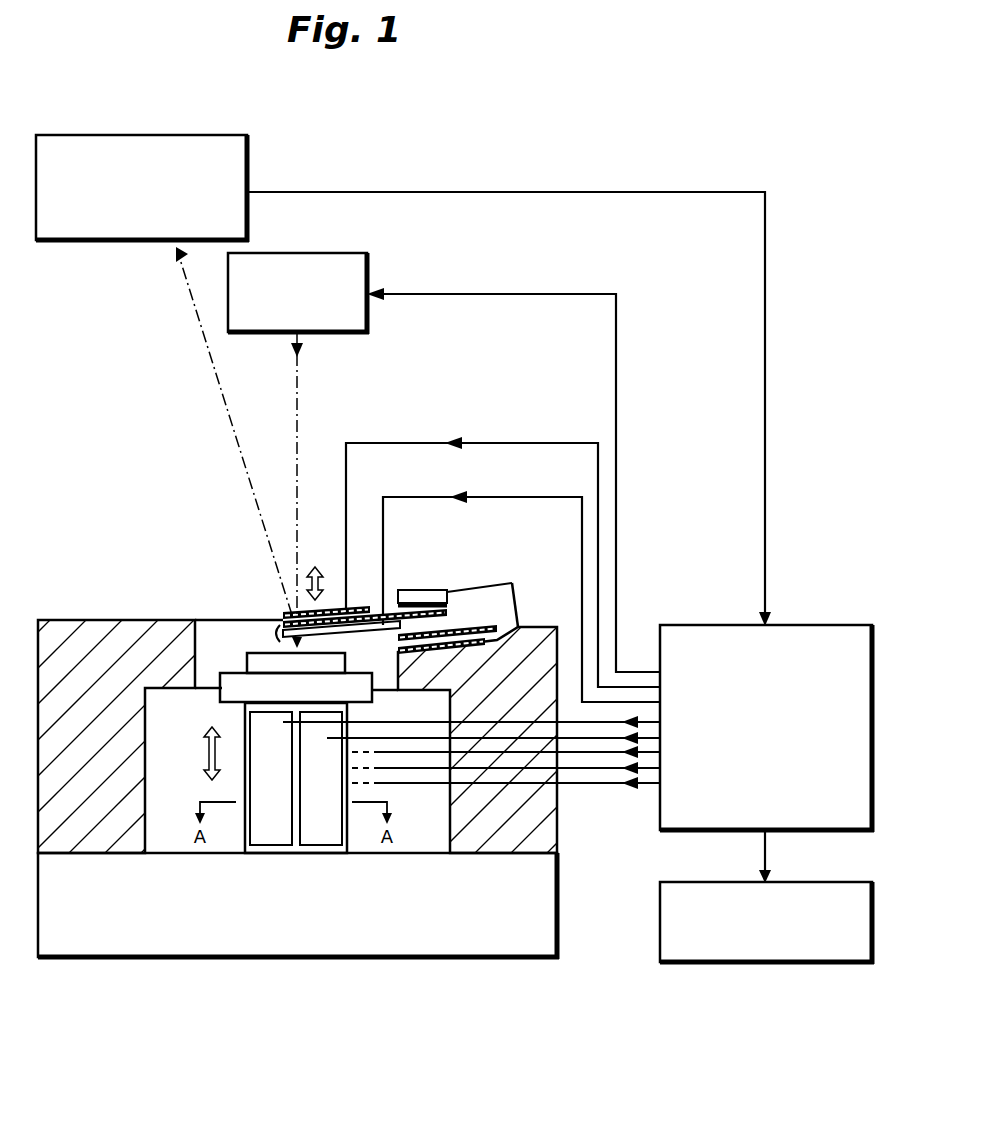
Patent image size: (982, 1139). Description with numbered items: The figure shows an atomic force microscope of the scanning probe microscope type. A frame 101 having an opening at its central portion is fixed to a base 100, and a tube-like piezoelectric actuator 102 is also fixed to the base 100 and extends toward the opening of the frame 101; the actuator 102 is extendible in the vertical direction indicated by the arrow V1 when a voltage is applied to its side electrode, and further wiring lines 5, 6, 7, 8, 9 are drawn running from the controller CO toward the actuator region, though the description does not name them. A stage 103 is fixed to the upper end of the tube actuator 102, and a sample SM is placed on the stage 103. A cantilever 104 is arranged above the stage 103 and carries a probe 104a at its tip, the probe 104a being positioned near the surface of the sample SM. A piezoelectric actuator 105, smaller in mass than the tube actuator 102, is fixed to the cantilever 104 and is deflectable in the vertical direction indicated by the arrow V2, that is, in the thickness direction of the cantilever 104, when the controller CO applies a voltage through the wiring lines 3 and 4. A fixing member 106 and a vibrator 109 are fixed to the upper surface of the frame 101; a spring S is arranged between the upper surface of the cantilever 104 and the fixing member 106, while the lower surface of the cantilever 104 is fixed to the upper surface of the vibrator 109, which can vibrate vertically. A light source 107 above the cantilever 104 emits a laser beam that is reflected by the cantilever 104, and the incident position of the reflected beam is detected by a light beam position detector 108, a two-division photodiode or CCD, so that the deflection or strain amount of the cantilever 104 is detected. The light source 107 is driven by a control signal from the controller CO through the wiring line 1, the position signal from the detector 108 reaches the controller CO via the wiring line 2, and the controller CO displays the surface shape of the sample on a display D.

The wiring line 1 is at (617, 355).
The wiring line 2 is at (766, 278).
The wiring line 3 is at (511, 443).
The wiring line 4 is at (521, 497).
The scanner drive line 5 is at (380, 722).
The scanner drive line 6 is at (425, 738).
The scanner drive line 7 is at (414, 752).
The scanner drive line 8 is at (578, 770).
The scanner drive line 9 is at (605, 785).
The base 100 is at (125, 960).
The frame 101 is at (68, 620).
The tube-like piezoelectric actuator 102 is at (245, 713).
The stage 103 is at (222, 673).
The cantilever 104 is at (452, 622).
The probe 104a is at (283, 633).
The piezoelectric actuator 105 is at (372, 598).
The fixing member 106 is at (513, 586).
The light source 107 is at (352, 253).
The light beam position detector 108 is at (249, 178).
The vibrator 109 is at (510, 633).
The spring S is at (430, 604).
The sample SM is at (258, 653).
The controller CO is at (796, 625).
The display D is at (660, 912).
The arrow V1 is at (206, 755).
The arrow V2 is at (326, 570).